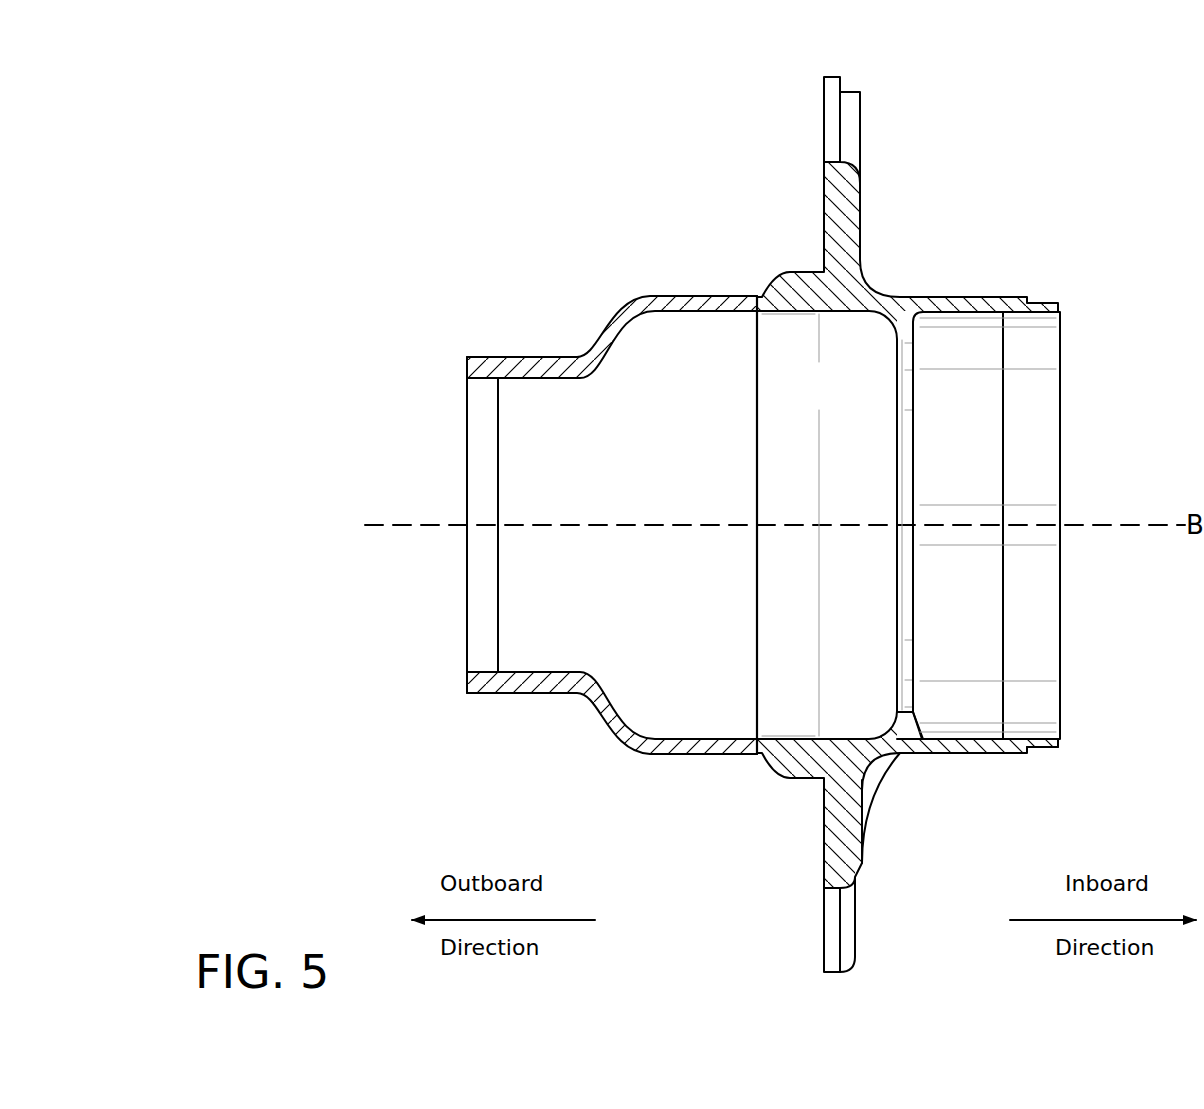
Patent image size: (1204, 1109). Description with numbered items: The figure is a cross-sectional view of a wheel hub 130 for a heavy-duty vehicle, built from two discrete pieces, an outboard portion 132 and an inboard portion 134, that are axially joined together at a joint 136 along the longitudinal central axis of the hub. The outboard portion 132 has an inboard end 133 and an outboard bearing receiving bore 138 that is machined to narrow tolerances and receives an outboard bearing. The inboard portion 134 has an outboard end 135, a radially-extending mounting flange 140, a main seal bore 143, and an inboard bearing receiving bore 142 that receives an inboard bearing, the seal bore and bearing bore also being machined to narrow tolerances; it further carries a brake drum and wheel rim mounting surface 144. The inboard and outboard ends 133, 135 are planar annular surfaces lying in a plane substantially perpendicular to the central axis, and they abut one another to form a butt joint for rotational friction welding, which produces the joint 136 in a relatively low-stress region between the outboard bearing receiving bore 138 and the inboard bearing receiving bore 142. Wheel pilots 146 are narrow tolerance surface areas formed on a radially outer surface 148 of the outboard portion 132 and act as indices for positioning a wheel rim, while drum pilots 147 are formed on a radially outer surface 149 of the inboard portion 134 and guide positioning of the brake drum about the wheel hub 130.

The wheel hub 130 is at (937, 158).
The outboard portion 132 is at (436, 306).
The inboard end 133 is at (757, 482).
The inboard portion 134 is at (1030, 278).
The outboard end 135 is at (757, 418).
The joint 136 is at (757, 632).
The outboard bearing receiving bore 138 is at (523, 672).
The mounting flange 140 is at (898, 840).
The inboard bearing receiving bore 142 is at (970, 735).
The main seal bore 143 is at (1043, 738).
The brake drum and wheel rim mounting surface 144 is at (822, 868).
The wheel pilots 146 is at (676, 288).
The drum pilots 147 is at (780, 266).
The radially outer surface 148 is at (655, 755).
The radially outer surface 149 is at (795, 778).